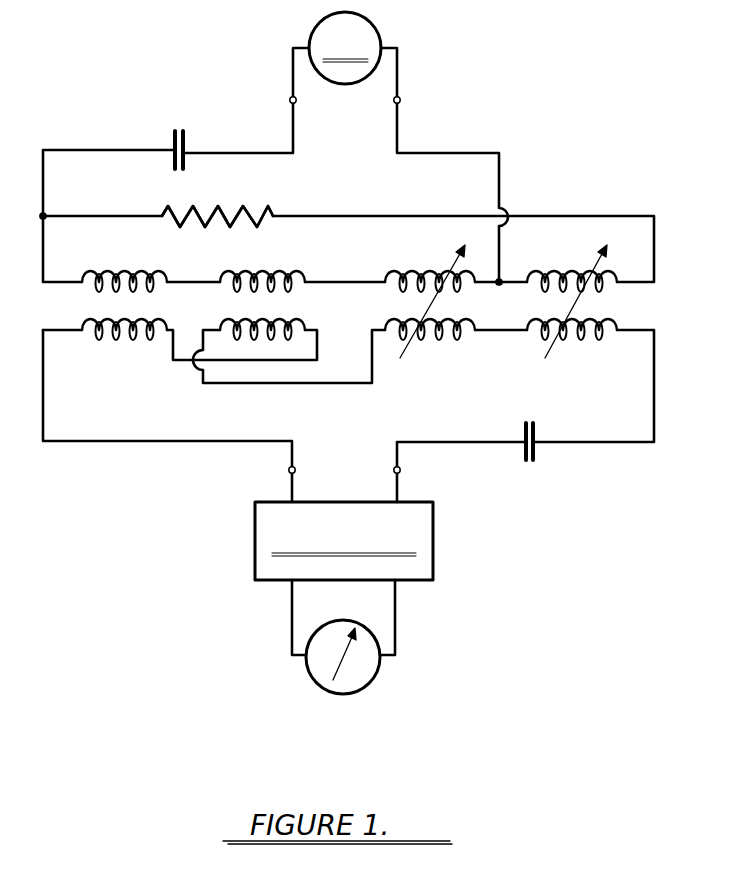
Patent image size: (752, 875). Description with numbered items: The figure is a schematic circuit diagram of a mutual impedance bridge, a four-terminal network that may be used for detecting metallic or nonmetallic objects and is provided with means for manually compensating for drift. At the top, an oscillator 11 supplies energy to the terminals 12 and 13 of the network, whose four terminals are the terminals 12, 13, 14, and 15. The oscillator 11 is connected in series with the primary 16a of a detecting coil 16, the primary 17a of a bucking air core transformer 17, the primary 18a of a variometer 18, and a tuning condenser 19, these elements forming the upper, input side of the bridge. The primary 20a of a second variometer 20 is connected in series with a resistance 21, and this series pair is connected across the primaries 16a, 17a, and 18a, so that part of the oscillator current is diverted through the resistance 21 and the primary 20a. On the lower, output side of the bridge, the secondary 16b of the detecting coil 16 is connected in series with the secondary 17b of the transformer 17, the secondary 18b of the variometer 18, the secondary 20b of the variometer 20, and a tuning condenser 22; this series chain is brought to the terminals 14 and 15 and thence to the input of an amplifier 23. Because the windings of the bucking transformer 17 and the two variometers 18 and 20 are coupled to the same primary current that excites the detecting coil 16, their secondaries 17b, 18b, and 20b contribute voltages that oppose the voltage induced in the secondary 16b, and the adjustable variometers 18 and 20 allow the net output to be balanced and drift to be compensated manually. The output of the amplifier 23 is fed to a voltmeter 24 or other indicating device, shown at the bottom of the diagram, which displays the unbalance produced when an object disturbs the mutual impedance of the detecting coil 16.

The oscillator 11 is at (381, 42).
The terminal 12 is at (291, 98).
The terminal 13 is at (400, 97).
The terminal 14 is at (288, 470).
The terminal 15 is at (400, 470).
The detecting coil 16 is at (97, 307).
The primary of detecting coil 16a is at (124, 269).
The secondary of detecting coil 16b is at (124, 344).
The bucking air core transformer 17 is at (237, 307).
The primary of bucking transformer 17a is at (262, 269).
The secondary of bucking transformer 17b is at (200, 305).
The variometer 18 is at (400, 307).
The primary of variometer 18a is at (430, 269).
The secondary of variometer 18b is at (430, 344).
The tuning condenser 19 is at (170, 146).
The second variometer 20 is at (599, 307).
The primary of second variometer 20a is at (572, 269).
The secondary of second variometer 20b is at (637, 308).
The resistance 21 is at (253, 205).
The tuning condenser 22 is at (540, 457).
The amplifier 23 is at (267, 545).
The voltmeter 24 is at (305, 673).